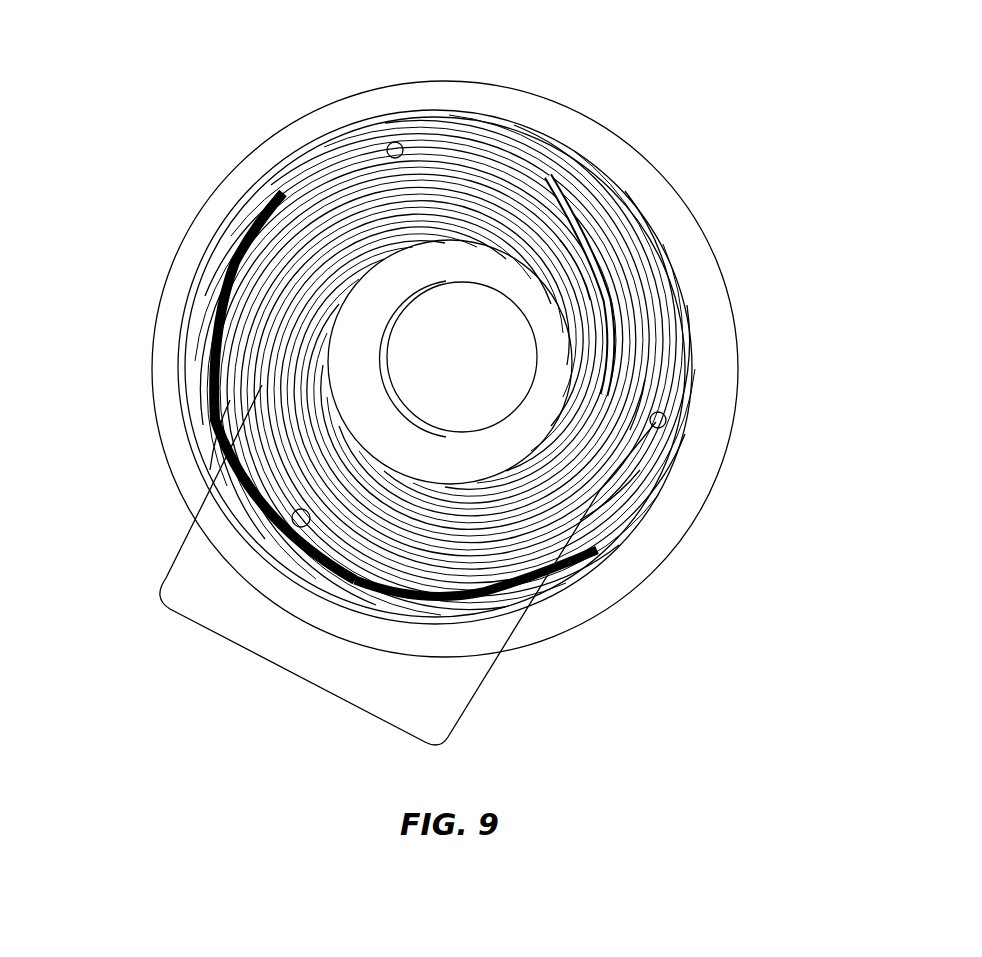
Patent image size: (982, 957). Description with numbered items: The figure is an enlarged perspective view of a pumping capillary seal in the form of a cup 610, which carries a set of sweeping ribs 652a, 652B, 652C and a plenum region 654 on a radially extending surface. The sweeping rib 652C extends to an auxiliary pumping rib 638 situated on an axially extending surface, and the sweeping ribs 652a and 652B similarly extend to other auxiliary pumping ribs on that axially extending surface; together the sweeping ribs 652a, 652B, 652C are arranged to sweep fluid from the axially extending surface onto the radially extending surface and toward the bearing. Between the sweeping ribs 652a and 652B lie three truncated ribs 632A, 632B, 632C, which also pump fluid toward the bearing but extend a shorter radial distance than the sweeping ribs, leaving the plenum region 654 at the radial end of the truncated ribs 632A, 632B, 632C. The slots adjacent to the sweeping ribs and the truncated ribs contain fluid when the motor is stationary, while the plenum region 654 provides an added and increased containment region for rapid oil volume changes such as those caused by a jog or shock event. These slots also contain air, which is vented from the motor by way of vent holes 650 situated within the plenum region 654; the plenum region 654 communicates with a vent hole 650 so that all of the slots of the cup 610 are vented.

The cup 610 is at (660, 101).
The vent hole 650 is at (775, 463).
The sweeping rib 652a is at (633, 256).
The sweeping rib 652B is at (555, 567).
The sweeping rib 652C is at (260, 312).
The truncated rib 632A is at (635, 348).
The truncated rib 632B is at (655, 395).
The truncated rib 632C is at (610, 497).
The auxiliary pumping rib 638 is at (217, 447).
The plenum region 654 is at (307, 689).